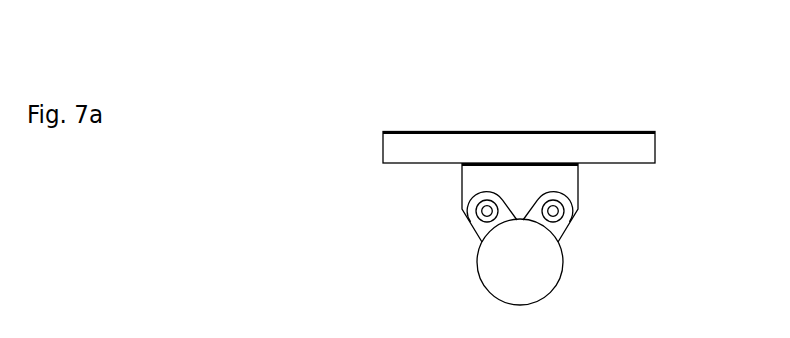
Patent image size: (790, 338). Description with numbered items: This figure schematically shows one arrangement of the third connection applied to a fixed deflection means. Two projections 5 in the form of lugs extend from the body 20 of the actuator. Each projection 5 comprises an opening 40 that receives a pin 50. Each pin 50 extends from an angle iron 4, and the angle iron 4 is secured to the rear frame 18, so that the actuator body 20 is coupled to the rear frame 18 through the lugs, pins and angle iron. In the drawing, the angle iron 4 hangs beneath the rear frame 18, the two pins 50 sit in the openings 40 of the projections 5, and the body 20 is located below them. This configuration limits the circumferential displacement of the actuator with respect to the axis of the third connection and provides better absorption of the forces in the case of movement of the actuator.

The rear frame 18 is at (453, 145).
The angle iron 4 is at (438, 186).
The opening 40 is at (470, 221).
The pin 50 is at (556, 212).
The projection 5 is at (455, 244).
The body 20 is at (541, 281).